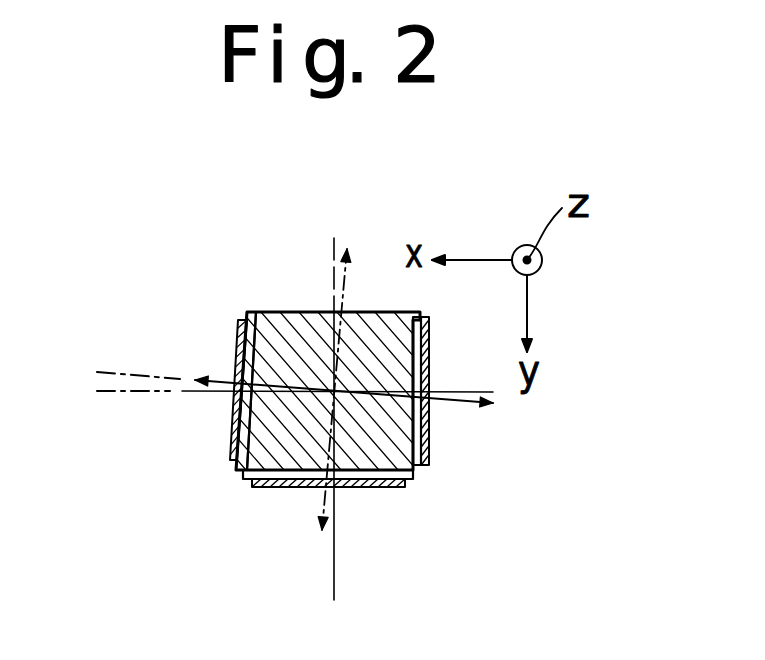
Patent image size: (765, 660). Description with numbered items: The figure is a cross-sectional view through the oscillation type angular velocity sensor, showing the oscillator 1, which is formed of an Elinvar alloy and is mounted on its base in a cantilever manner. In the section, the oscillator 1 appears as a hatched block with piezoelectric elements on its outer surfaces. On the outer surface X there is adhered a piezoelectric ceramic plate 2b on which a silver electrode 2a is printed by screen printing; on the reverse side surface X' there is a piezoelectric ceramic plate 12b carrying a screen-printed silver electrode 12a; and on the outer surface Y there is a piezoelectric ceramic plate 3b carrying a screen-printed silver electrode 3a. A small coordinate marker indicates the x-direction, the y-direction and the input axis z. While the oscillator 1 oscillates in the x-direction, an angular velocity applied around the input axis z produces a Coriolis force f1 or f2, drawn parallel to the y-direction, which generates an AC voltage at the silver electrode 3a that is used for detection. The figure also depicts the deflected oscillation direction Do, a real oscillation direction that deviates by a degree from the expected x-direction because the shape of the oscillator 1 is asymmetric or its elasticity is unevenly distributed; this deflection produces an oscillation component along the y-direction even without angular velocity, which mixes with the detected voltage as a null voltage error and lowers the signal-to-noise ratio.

The oscillator 1 is at (297, 311).
The silver electrode 2a is at (240, 338).
The piezoelectric ceramic plate 2b is at (248, 312).
The silver electrode 3a is at (382, 487).
The piezoelectric ceramic plate 3b is at (410, 480).
The silver electrode 12a is at (429, 332).
The piezoelectric ceramic plate 12b is at (415, 311).
The deflected oscillation direction Do is at (223, 378).
The Coriolis force f1 is at (306, 543).
The Coriolis force f2 is at (351, 361).